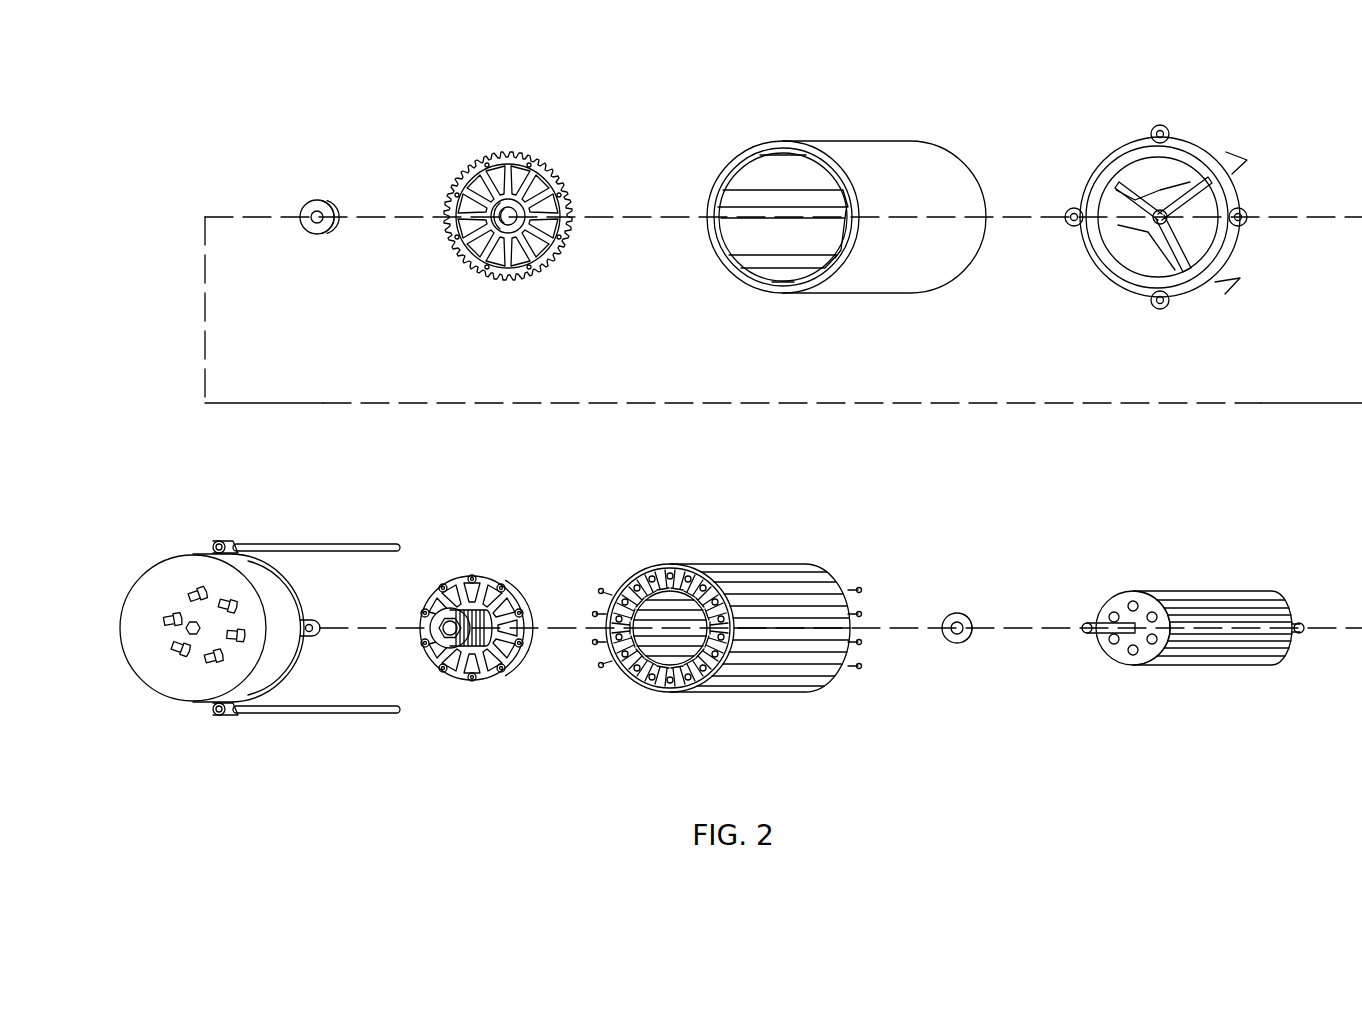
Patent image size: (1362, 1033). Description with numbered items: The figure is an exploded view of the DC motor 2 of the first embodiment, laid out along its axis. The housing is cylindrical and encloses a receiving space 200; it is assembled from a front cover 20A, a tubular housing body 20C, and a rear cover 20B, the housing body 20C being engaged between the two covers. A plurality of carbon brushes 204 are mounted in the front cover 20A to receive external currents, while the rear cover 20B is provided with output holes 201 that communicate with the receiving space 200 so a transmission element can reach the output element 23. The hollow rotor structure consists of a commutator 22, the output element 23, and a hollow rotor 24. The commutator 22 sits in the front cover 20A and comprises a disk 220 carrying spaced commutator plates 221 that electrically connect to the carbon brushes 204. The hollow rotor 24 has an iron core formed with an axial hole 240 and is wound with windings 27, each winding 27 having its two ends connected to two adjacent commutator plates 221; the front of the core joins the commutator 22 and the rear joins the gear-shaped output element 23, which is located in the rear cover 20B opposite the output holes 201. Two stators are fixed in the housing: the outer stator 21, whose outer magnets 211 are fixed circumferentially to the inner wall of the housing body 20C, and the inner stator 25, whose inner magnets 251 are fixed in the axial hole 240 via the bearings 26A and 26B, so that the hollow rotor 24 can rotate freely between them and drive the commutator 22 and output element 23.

The DC motor 2 is at (185, 105).
The bearing 26B is at (318, 207).
The output element 23 is at (512, 152).
The outer stator 21 is at (950, 128).
The housing body 20C is at (858, 148).
The outer magnets 211 is at (760, 176).
The receiving space 200 is at (745, 232).
The rear cover 20B is at (1098, 148).
The output holes 201 is at (1130, 250).
The front cover 20A is at (183, 682).
The carbon brushes 204 is at (187, 582).
The commutator 22 is at (505, 560).
The disk 220 is at (520, 655).
The commutator plates 221 is at (478, 655).
The hollow rotor 24 is at (790, 670).
The axial hole 240 is at (652, 570).
The windings 27 is at (690, 695).
The bearing 26A is at (960, 612).
The inner stator 25 is at (1245, 575).
The inner magnets 251 is at (1247, 634).